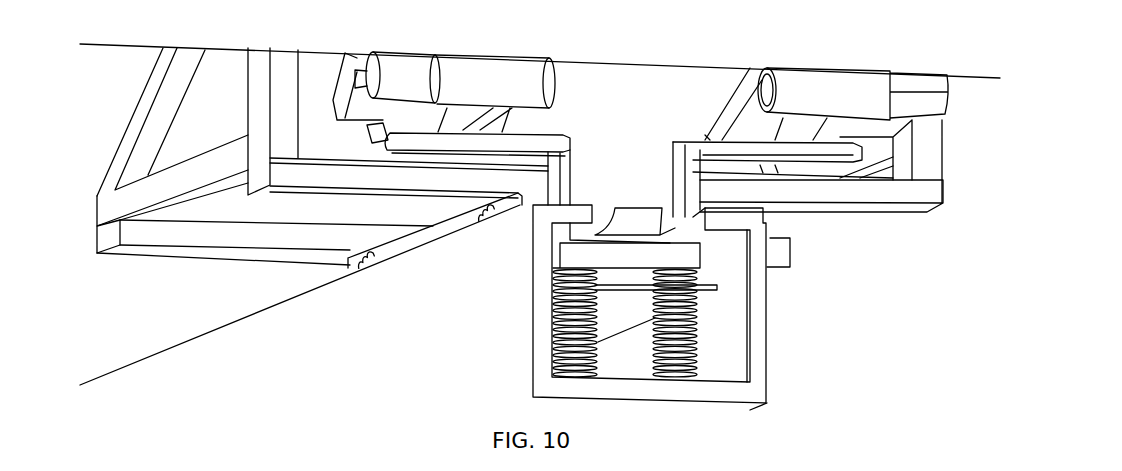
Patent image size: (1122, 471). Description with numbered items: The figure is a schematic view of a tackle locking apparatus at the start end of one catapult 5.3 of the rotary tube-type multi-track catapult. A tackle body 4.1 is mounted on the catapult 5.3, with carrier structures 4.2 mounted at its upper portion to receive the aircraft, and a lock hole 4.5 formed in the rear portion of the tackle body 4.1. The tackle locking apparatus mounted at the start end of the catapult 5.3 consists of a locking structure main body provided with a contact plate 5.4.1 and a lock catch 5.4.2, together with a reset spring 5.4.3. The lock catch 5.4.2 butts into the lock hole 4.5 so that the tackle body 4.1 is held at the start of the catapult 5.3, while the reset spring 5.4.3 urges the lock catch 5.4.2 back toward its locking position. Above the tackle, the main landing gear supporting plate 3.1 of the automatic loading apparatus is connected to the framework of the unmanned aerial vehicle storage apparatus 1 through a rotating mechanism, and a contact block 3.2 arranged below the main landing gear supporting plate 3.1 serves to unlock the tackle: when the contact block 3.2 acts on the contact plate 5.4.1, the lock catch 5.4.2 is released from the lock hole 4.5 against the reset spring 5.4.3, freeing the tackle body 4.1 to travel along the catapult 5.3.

The unmanned aerial vehicle storage apparatus 1 is at (597, 43).
The main landing gear supporting plate 3.1 is at (760, 127).
The contact block 3.2 is at (798, 127).
The tackle body 4.1 is at (588, 182).
The carrier structure 4.2 is at (278, 97).
The lock hole 4.5 is at (613, 237).
The catapult 5.3 is at (445, 350).
The contact plate 5.4.1 is at (747, 150).
The lock catch 5.4.2 is at (630, 240).
The reset spring 5.4.3 is at (680, 293).